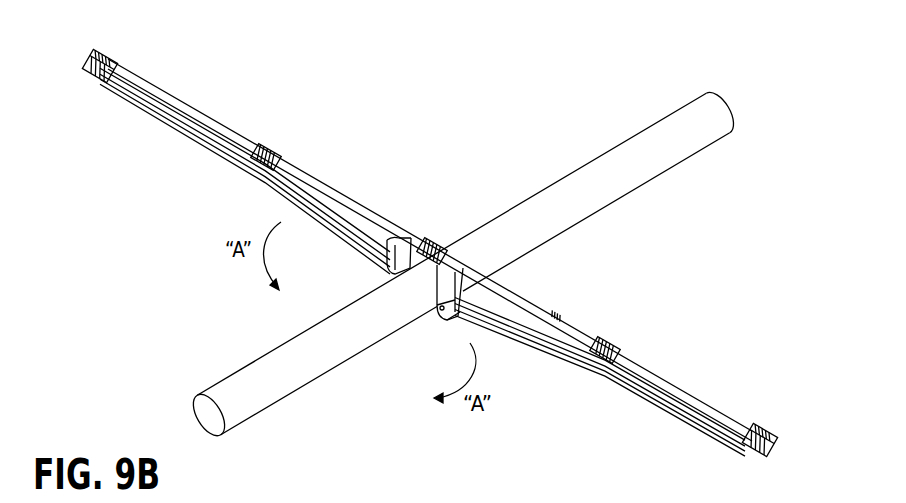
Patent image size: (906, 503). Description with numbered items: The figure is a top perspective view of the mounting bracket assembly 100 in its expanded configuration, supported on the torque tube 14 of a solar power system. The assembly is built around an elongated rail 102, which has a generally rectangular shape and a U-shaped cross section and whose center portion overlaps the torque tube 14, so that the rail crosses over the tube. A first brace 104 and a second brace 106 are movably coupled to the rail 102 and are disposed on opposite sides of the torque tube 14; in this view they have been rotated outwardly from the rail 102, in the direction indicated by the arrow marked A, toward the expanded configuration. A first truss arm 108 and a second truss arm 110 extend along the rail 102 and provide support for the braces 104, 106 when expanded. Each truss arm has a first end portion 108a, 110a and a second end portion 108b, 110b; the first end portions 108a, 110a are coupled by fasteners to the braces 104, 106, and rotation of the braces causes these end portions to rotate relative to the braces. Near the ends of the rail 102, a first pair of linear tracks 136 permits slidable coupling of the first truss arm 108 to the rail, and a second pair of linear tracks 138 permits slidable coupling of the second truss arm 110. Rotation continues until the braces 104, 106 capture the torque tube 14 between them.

The torque tube 14 is at (681, 148).
The mounting bracket assembly 100 is at (343, 154).
The rail 102 is at (560, 317).
The first brace 104 is at (388, 240).
The second brace 106 is at (517, 300).
The first truss arm 108 is at (362, 246).
The first end portion of first truss arm 108a is at (390, 270).
The second end portion of first truss arm 108b is at (217, 152).
The second truss arm 110 is at (583, 368).
The first end portion of second truss arm 110a is at (450, 318).
The second end portion of second truss arm 110b is at (660, 400).
The first pair of linear tracks 136 is at (136, 82).
The second pair of linear tracks 138 is at (713, 423).